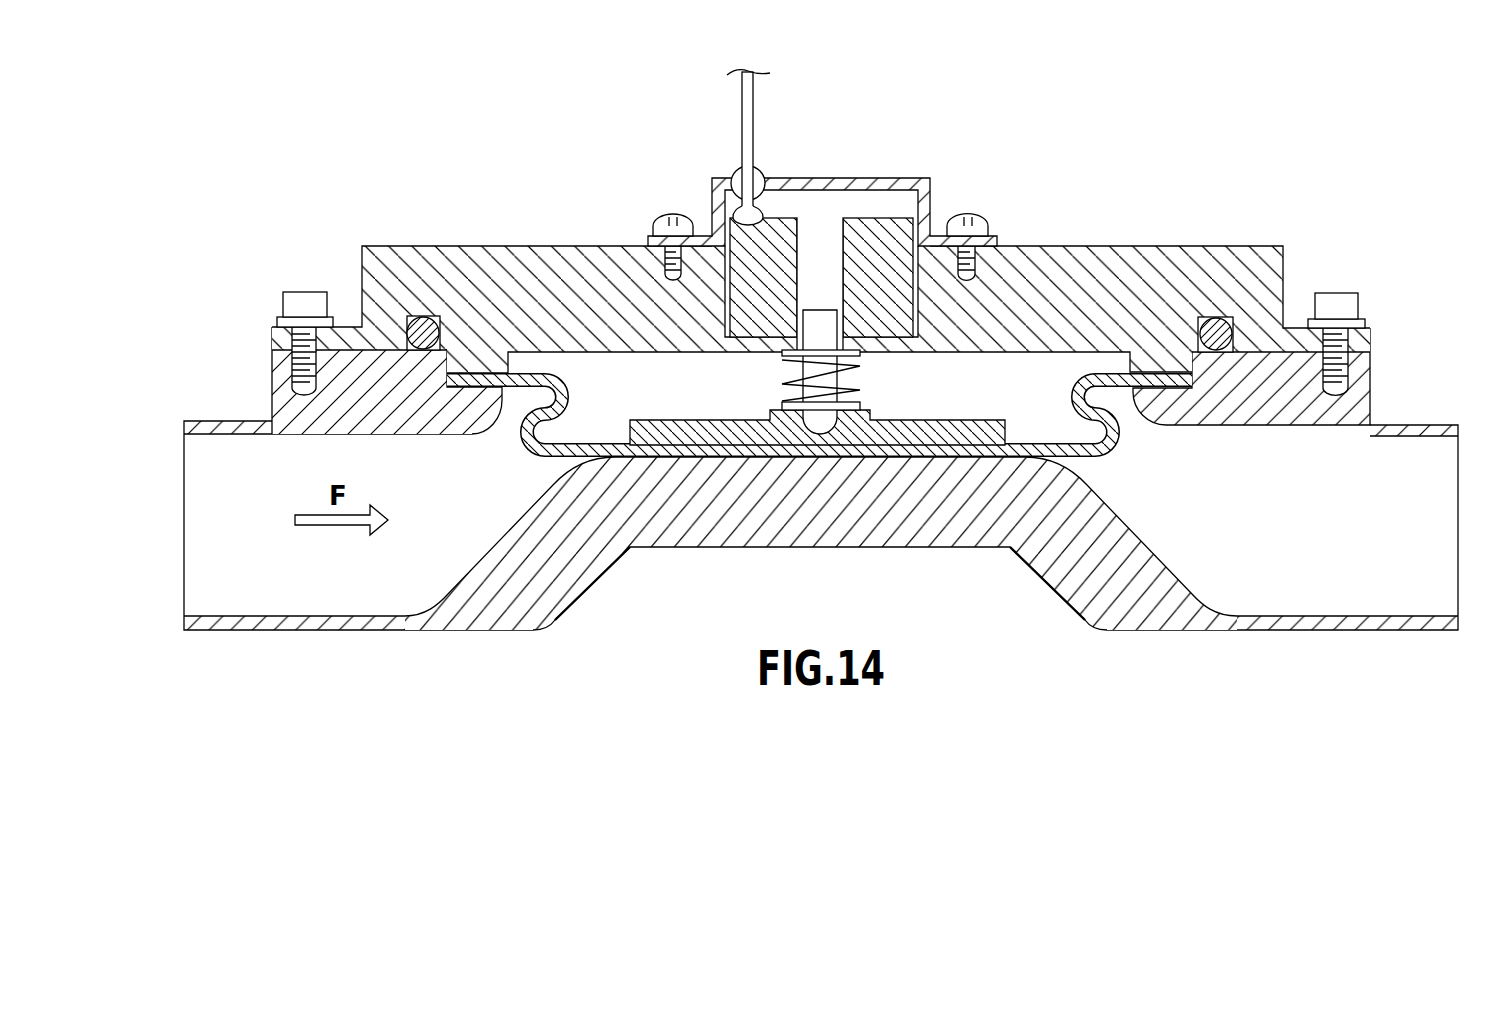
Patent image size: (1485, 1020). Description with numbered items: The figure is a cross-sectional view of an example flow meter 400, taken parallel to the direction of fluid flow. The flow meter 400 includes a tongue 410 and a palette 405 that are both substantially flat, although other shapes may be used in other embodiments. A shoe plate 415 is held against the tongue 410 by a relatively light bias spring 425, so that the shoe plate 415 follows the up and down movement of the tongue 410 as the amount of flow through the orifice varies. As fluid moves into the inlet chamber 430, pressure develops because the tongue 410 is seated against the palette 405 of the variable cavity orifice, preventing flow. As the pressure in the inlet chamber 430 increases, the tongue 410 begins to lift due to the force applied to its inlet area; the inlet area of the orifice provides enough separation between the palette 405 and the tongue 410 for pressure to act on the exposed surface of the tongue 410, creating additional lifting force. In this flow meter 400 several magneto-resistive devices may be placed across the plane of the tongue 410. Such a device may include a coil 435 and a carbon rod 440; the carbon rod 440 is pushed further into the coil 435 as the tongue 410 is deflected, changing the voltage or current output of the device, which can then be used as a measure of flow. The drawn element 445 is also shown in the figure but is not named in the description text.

The flow sensing assembly 400 is at (398, 166).
The body 405 is at (816, 546).
The diaphragm 410 is at (1118, 448).
The plate 415 is at (962, 417).
The pin 425 is at (800, 374).
The conduit 430 is at (186, 522).
The sensor housing 435 is at (880, 217).
The spring 440 is at (864, 390).
The rod 445 is at (742, 126).